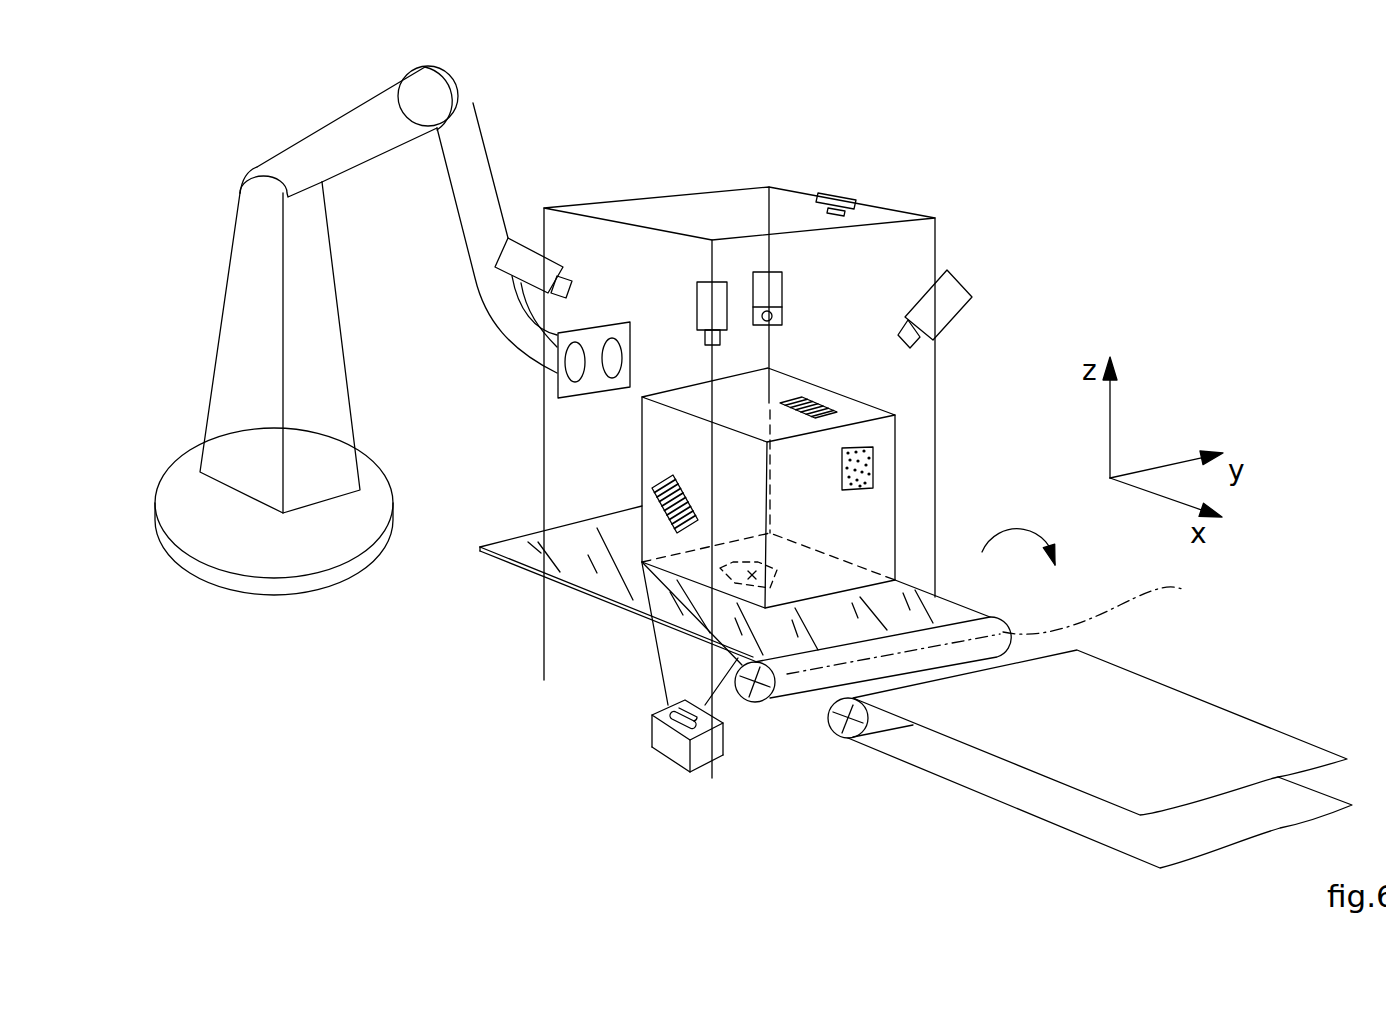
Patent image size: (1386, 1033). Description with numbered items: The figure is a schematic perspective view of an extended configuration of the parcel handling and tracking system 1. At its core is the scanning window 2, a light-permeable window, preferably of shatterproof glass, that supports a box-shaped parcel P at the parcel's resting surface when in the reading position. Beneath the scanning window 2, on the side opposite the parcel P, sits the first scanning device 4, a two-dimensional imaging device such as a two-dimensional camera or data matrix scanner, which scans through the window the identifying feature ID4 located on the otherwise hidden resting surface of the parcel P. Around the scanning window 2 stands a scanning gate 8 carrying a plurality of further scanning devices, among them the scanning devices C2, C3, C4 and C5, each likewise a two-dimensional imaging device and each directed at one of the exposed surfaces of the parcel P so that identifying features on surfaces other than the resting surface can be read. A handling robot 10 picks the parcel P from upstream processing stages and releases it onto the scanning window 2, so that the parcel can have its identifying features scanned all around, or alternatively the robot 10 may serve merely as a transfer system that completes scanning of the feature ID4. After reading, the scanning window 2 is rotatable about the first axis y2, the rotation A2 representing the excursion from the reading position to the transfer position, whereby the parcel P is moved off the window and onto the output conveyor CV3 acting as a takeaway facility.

The handling robot 10 is at (220, 530).
The parcel handling and tracking system 1 is at (811, 434).
The scanning gate 8 is at (892, 207).
The scanning device C5 is at (840, 192).
The scanning device C4 is at (538, 253).
The scanning device C2 is at (697, 307).
The scanning device C3 is at (782, 291).
The parcel P is at (810, 517).
The identifying feature ID4 is at (792, 578).
The scanning window 2 is at (953, 595).
The first axis y2 is at (1113, 603).
The rotation A2 is at (1026, 527).
The output conveyor CV3 is at (1178, 717).
The first scanning device 4 is at (672, 740).